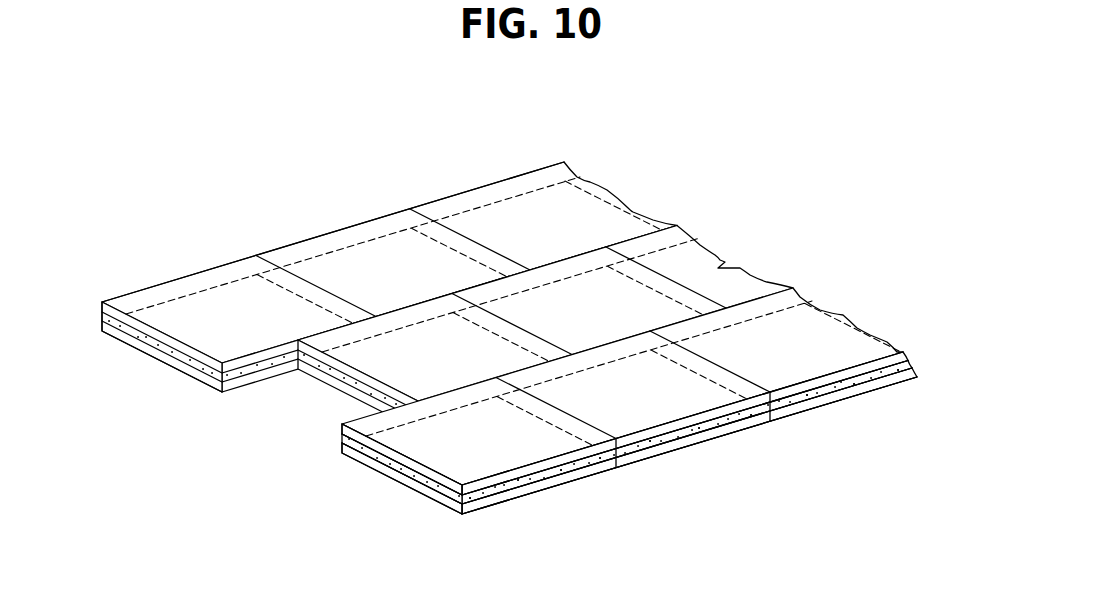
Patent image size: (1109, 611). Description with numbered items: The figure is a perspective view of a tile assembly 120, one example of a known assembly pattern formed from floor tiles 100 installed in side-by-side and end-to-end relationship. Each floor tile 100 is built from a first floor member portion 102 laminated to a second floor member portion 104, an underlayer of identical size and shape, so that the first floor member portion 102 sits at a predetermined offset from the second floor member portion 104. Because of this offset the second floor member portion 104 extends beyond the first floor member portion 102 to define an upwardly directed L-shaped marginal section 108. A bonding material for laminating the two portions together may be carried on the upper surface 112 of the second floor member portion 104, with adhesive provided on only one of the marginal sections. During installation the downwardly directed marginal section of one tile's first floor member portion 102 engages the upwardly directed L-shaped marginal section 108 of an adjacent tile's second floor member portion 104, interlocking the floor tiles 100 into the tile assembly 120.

The floor tile 100 is at (480, 186).
The first floor member portion 102 is at (416, 464).
The second floor member portion 104 is at (420, 490).
The L-shaped marginal section 108 is at (504, 484).
The upper surface 112 is at (582, 466).
The tile assembly 120 is at (673, 156).